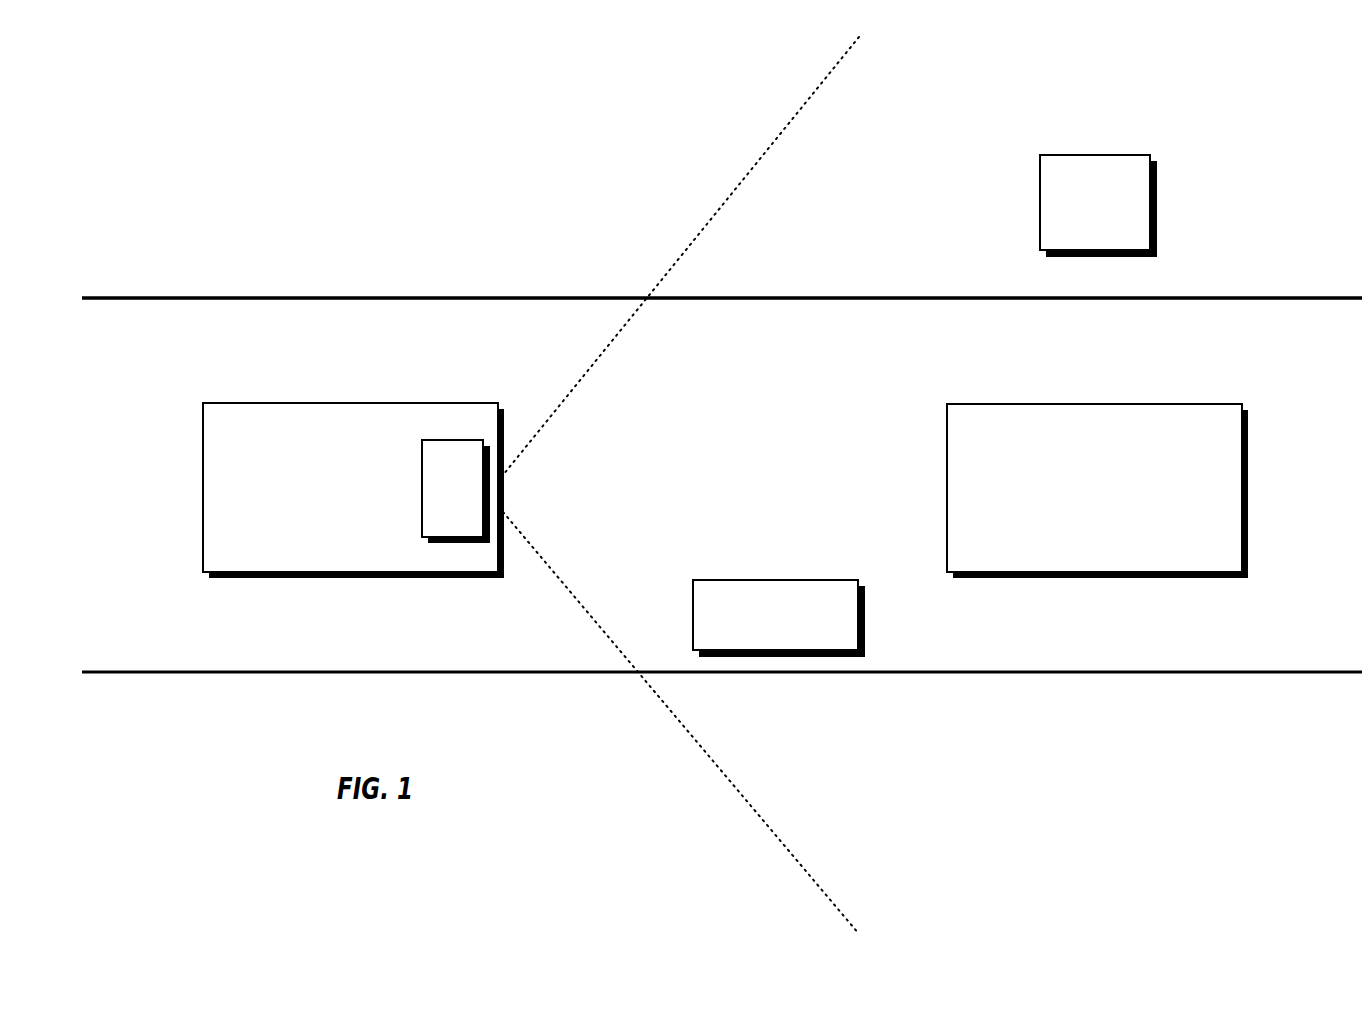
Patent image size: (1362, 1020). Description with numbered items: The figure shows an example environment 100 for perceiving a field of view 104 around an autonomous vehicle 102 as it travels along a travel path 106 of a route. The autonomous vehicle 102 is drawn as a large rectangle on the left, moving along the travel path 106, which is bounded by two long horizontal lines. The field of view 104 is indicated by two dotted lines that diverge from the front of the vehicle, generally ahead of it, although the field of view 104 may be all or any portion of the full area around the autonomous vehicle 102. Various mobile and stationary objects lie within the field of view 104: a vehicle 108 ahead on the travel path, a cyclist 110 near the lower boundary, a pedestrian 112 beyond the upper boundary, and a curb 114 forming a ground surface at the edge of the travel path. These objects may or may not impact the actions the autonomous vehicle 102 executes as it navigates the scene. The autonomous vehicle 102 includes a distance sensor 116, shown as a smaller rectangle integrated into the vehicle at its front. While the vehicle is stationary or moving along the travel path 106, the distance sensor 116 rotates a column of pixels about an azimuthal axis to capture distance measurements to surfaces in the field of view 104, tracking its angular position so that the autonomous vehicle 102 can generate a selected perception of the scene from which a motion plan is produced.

The environment 100 is at (507, 125).
The autonomous vehicle 102 is at (368, 500).
The field of view 104 is at (730, 783).
The travel path 106 is at (254, 329).
The vehicle 108 is at (1113, 500).
The cyclist 110 is at (794, 626).
The pedestrian 112 is at (1113, 214).
The curb 114 is at (1234, 298).
The distance sensor 116 is at (471, 500).